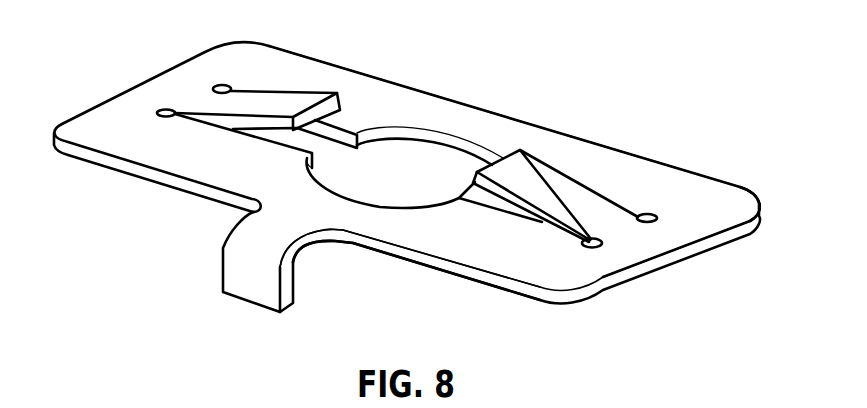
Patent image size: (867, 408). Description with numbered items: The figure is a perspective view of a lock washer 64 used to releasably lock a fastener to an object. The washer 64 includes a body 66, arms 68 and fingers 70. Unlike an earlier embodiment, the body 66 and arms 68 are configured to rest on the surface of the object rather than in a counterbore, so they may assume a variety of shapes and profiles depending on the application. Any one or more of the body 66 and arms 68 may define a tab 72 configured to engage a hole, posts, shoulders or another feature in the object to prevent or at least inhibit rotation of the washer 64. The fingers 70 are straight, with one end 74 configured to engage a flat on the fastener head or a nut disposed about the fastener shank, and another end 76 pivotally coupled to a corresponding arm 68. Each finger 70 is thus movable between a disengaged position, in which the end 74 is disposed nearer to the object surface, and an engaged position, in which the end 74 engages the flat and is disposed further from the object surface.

The lock washer 64 is at (120, 72).
The body 66 is at (358, 210).
The arms 68 is at (702, 202).
The fingers 70 is at (580, 203).
The tab 72 is at (243, 272).
The one end 74 is at (514, 165).
The another end 76 is at (636, 232).